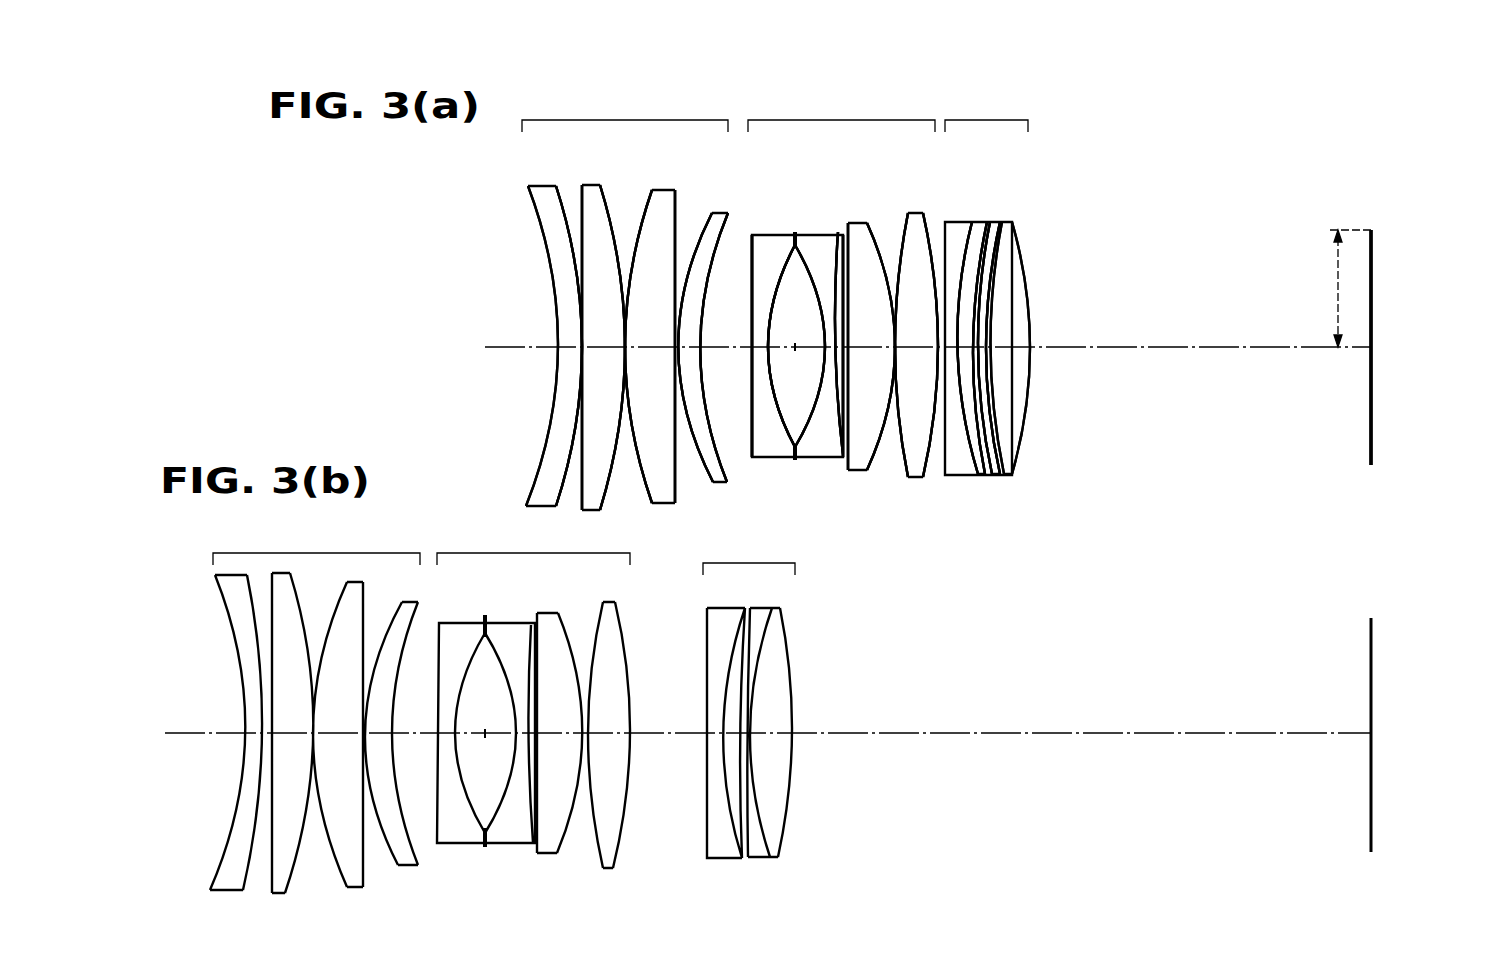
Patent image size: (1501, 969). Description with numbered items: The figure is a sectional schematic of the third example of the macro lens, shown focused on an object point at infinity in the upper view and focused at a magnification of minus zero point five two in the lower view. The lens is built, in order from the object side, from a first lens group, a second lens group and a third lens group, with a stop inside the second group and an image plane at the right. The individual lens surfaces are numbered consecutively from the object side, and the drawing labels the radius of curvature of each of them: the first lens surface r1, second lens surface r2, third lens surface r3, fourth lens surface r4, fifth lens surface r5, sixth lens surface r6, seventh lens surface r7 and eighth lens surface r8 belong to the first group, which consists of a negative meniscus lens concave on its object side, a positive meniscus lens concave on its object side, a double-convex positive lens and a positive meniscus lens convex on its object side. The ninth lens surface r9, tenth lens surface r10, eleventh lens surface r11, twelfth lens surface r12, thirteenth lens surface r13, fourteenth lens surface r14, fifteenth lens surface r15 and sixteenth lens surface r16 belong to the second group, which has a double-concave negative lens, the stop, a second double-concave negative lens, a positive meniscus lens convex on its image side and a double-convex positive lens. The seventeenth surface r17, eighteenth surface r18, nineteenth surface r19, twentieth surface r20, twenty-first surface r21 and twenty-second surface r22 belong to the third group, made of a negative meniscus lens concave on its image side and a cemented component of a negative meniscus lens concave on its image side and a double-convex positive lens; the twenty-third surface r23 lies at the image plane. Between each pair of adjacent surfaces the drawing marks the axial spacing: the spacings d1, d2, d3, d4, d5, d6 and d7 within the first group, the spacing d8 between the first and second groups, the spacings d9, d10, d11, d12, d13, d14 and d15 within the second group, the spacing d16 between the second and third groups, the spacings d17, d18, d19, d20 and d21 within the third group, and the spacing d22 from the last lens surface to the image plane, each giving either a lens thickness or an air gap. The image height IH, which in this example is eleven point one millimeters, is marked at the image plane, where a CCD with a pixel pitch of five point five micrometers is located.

The radius of curvature of the first lens surface r1 is at (533, 208).
The radius of curvature of the second lens surface r2 is at (557, 198).
The radius of curvature of the third lens surface r3 is at (583, 195).
The radius of curvature of the fourth lens surface r4 is at (604, 200).
The radius of curvature of the fifth lens surface r5 is at (650, 205).
The radius of curvature of the sixth lens surface r6 is at (676, 205).
The radius of curvature of the seventh lens surface r7 is at (708, 218).
The radius of curvature of the eighth lens surface r8 is at (728, 216).
The radius of curvature of the ninth lens surface r9 is at (752, 235).
The radius of curvature of the tenth lens surface r10 is at (786, 248).
The radius of curvature of the eleventh lens surface r11 is at (805, 248).
The radius of curvature of the twelfth lens surface r12 is at (838, 240).
The radius of curvature of the thirteenth lens surface r13 is at (848, 228).
The radius of curvature of the fourteenth lens surface r14 is at (870, 235).
The radius of curvature of the fifteenth lens surface r15 is at (905, 225).
The radius of curvature of the sixteenth lens surface r16 is at (925, 225).
The radius of curvature of the seventeenth lens surface r17 is at (968, 225).
The radius of curvature of the eighteenth lens surface r18 is at (985, 235).
The radius of curvature of the nineteenth lens surface r19 is at (992, 230).
The radius of curvature of the twentieth lens surface r20 is at (998, 235).
The radius of curvature of the twenty-first lens surface r21 is at (1005, 232).
The radius of curvature of the twenty-second lens surface r22 is at (1022, 248).
The radius of curvature of the twenty-third surface r23 is at (1373, 252).
The spacing between the first and second lens surfaces d1 is at (565, 350).
The spacing between the second and third lens surfaces d2 is at (580, 356).
The spacing between the third and fourth lens surfaces d3 is at (603, 347).
The spacing between the fourth and fifth lens surfaces d4 is at (623, 397).
The spacing between the fifth and sixth lens surfaces d5 is at (650, 346).
The spacing between the sixth and seventh lens surfaces d6 is at (683, 397).
The spacing between the seventh and eighth lens surfaces d7 is at (706, 484).
The spacing between the eighth and ninth lens surfaces d8 is at (726, 347).
The spacing between the ninth and tenth lens surfaces d9 is at (753, 377).
The spacing between the tenth and eleventh lens surfaces d10 is at (755, 390).
The spacing between the eleventh and twelfth lens surfaces d11 is at (796, 346).
The spacing between the twelfth and thirteenth lens surfaces d12 is at (829, 390).
The spacing between the thirteenth and fourteenth lens surfaces d13 is at (851, 420).
The spacing between the fourteenth and fifteenth lens surfaces d14 is at (871, 346).
The spacing between the fifteenth and sixteenth lens surfaces d15 is at (893, 390).
The spacing between the sixteenth and seventeenth lens surfaces d16 is at (916, 345).
The spacing between the seventeenth and eighteenth lens surfaces d17 is at (938, 390).
The spacing between the eighteenth and nineteenth lens surfaces d18 is at (975, 390).
The spacing between the nineteenth and twentieth lens surfaces d19 is at (995, 478).
The spacing between the twentieth and twenty-first lens surfaces d20 is at (1003, 455).
The spacing between the twenty-first and twenty-second lens surfaces d21 is at (1007, 348).
The spacing between the twenty-second surface and the image plane d22 is at (1191, 348).
The image height IH is at (1346, 288).